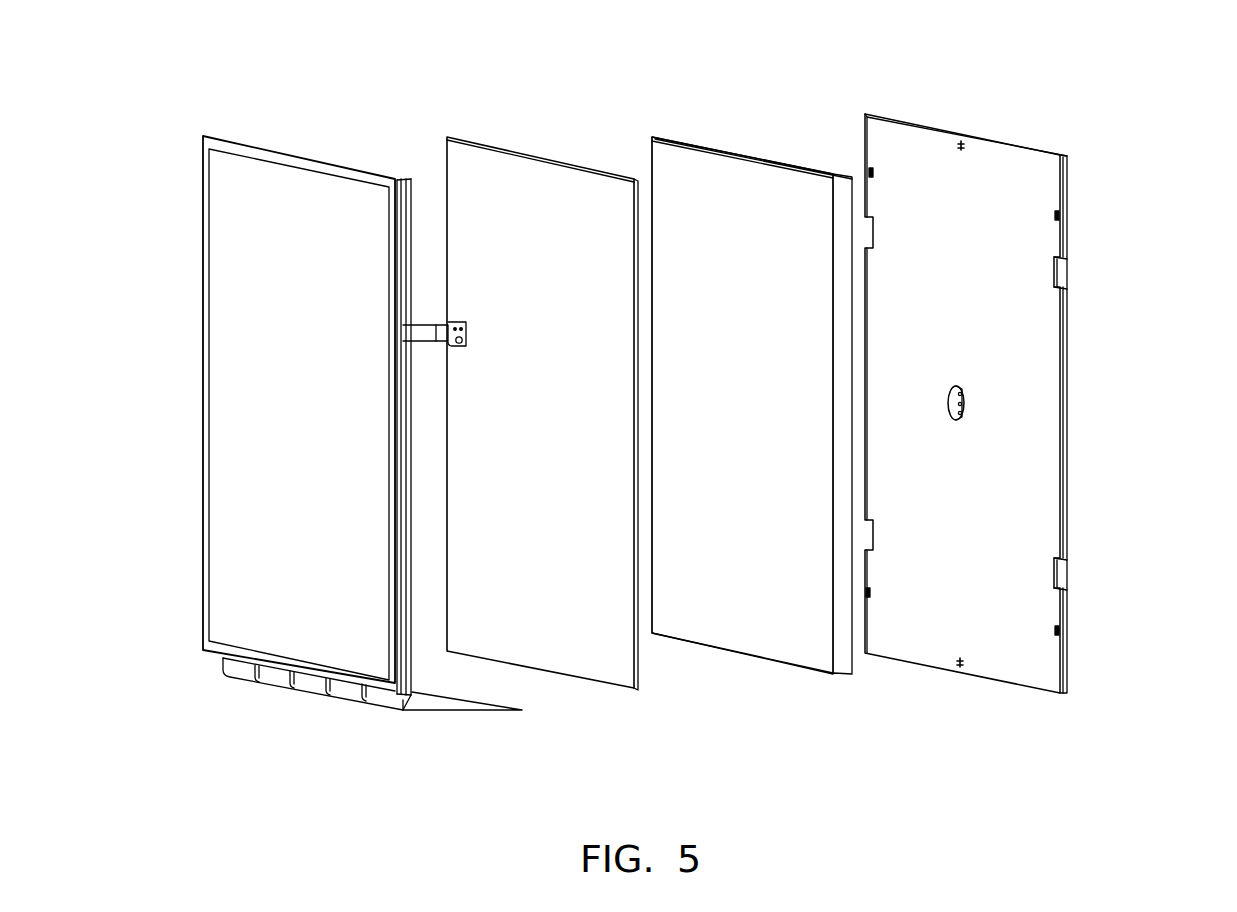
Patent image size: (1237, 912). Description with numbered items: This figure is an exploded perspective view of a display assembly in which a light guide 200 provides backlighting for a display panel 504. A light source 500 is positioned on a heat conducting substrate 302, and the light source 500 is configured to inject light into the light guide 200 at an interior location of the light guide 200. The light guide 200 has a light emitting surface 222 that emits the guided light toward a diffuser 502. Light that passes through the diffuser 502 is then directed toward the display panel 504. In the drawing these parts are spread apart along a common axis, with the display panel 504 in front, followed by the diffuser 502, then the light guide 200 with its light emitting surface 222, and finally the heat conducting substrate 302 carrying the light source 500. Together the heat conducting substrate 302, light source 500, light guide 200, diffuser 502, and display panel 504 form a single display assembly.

The display panel 504 is at (265, 318).
The diffuser 502 is at (480, 193).
The light emitting surface 222 is at (692, 172).
The light guide 200 is at (755, 153).
The heat conducting substrate 302 is at (990, 138).
The light source 500 is at (968, 407).